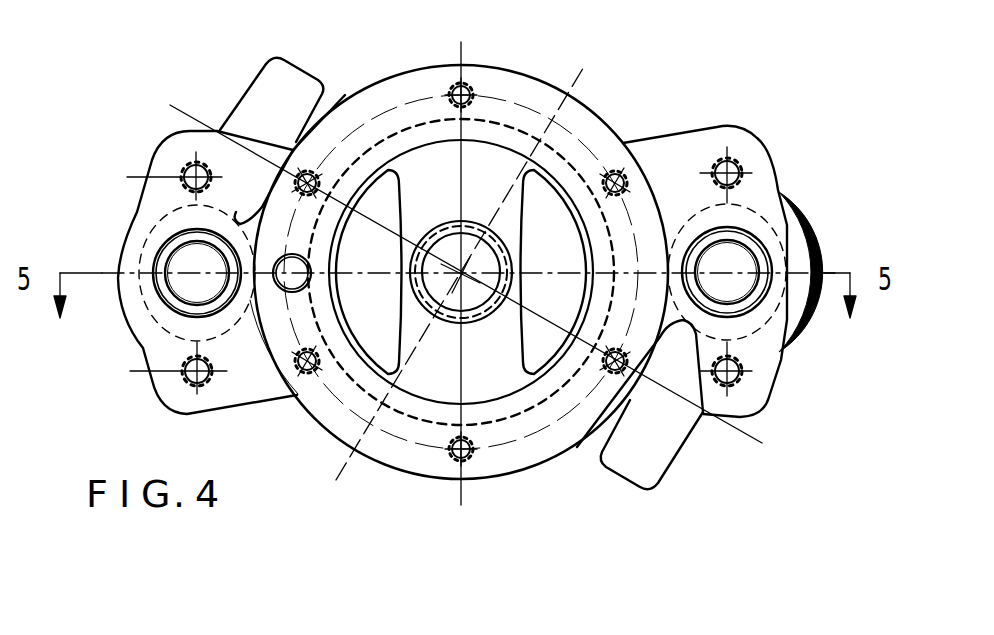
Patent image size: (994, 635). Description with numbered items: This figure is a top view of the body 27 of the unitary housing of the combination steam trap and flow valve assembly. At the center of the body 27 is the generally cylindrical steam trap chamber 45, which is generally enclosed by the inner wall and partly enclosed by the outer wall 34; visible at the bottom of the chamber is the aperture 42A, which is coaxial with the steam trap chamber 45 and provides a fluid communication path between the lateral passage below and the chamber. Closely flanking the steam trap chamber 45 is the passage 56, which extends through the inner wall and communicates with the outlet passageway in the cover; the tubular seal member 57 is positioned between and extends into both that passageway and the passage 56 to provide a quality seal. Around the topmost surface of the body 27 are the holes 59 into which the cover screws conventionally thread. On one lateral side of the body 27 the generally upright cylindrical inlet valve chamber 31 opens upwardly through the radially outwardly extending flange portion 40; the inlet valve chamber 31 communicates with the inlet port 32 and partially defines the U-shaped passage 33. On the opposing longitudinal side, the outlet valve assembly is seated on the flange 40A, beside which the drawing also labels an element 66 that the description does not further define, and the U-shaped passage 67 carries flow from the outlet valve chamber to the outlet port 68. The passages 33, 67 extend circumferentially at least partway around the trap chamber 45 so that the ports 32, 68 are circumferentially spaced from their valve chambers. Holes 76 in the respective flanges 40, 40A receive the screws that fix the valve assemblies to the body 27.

The body 27 is at (592, 103).
The inlet valve chamber 31 is at (738, 247).
The inlet port 32 is at (683, 455).
The U-shaped passage 33 is at (650, 398).
The outer wall 34 is at (287, 398).
The flange portion 40 is at (767, 356).
The flange 40A is at (222, 155).
The aperture 42A is at (472, 240).
The steam trap chamber 45 is at (414, 150).
The passage 56 is at (369, 272).
The tubular seal member 57 is at (318, 282).
The holes 59 is at (312, 170).
The boss bore 66 is at (178, 242).
The U-shaped passage 67 is at (265, 98).
The outlet port 68 is at (248, 80).
The holes 76 is at (185, 165).